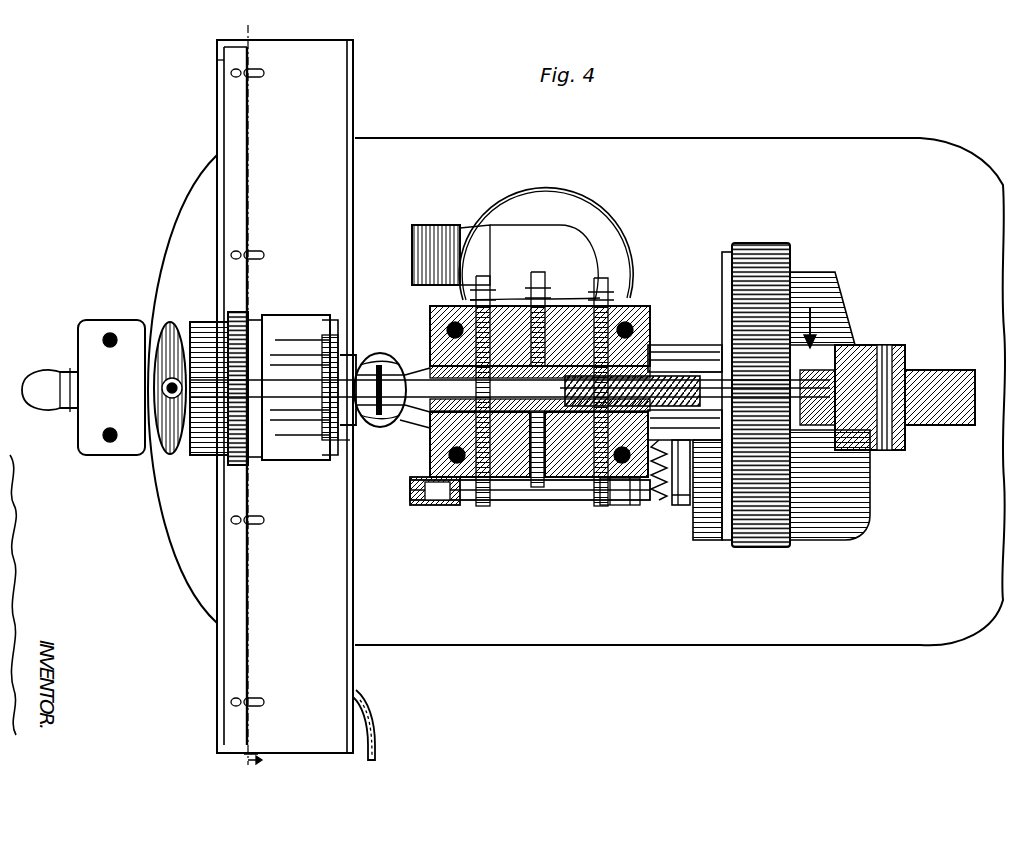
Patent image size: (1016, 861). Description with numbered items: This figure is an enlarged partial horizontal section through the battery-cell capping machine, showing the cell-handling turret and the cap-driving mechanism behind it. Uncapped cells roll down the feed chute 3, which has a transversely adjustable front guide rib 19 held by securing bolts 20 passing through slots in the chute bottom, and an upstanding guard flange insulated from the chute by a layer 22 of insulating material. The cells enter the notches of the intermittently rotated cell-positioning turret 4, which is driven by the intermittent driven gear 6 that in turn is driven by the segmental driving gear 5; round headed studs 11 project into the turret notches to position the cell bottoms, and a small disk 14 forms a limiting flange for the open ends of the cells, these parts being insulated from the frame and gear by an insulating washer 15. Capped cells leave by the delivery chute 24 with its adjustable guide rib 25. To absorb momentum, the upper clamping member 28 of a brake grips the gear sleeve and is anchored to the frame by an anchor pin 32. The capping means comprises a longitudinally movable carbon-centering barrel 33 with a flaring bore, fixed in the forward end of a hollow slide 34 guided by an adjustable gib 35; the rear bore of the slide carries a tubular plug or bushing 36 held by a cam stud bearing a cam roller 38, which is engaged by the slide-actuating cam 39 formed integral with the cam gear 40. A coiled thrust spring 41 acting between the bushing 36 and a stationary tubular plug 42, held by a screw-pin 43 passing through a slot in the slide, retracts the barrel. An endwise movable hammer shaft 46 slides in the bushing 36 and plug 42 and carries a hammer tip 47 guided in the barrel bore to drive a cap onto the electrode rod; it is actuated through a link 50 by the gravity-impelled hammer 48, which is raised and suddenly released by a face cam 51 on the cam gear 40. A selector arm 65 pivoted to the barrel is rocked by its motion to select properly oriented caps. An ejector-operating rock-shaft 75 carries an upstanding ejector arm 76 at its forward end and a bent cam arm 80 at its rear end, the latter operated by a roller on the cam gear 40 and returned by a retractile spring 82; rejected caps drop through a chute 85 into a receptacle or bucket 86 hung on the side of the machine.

The feed chute 3 is at (300, 640).
The cell-positioning turret 4 is at (300, 387).
The segmental driving gear 5 is at (278, 20).
The intermittent driven gear 6 is at (195, 322).
The round headed studs 11 is at (255, 388).
The small disk 14 is at (356, 442).
The insulating washer 15 is at (356, 352).
The front guide rib 19 is at (232, 678).
The securing bolts 20 is at (235, 521).
The layer of insulating material 22 is at (368, 736).
The delivery chute 24 is at (285, 396).
The adjustable guide rib 25 is at (220, 112).
The upper clamping member 28 is at (172, 322).
The anchor pin 32 is at (168, 388).
The carbon-centering barrel 33 is at (378, 360).
The slide 34 is at (660, 356).
The adjustable gib 35 is at (646, 306).
The tubular plug or bushing 36 is at (707, 489).
The cam roller 38 is at (700, 368).
The slide-actuating cam 39 is at (718, 335).
The cam gear 40 is at (767, 244).
The coiled thrust spring 41 is at (596, 444).
The tubular plug 42 is at (480, 444).
The screw-pin 43 is at (537, 488).
The hammer shaft 46 is at (695, 391).
The hammer tip 47 is at (428, 422).
The gravity-impelled hammer 48 is at (950, 371).
The link 50 is at (858, 345).
The face cam 51 is at (836, 278).
The selector arm 65 is at (418, 372).
The ejector-operating rock-shaft 75 is at (497, 500).
The ejector arm 76 is at (412, 500).
The bent cam arm 80 is at (683, 508).
The retractile spring 82 is at (660, 498).
The chute 85 is at (412, 268).
The receptacle or bucket 86 is at (610, 238).